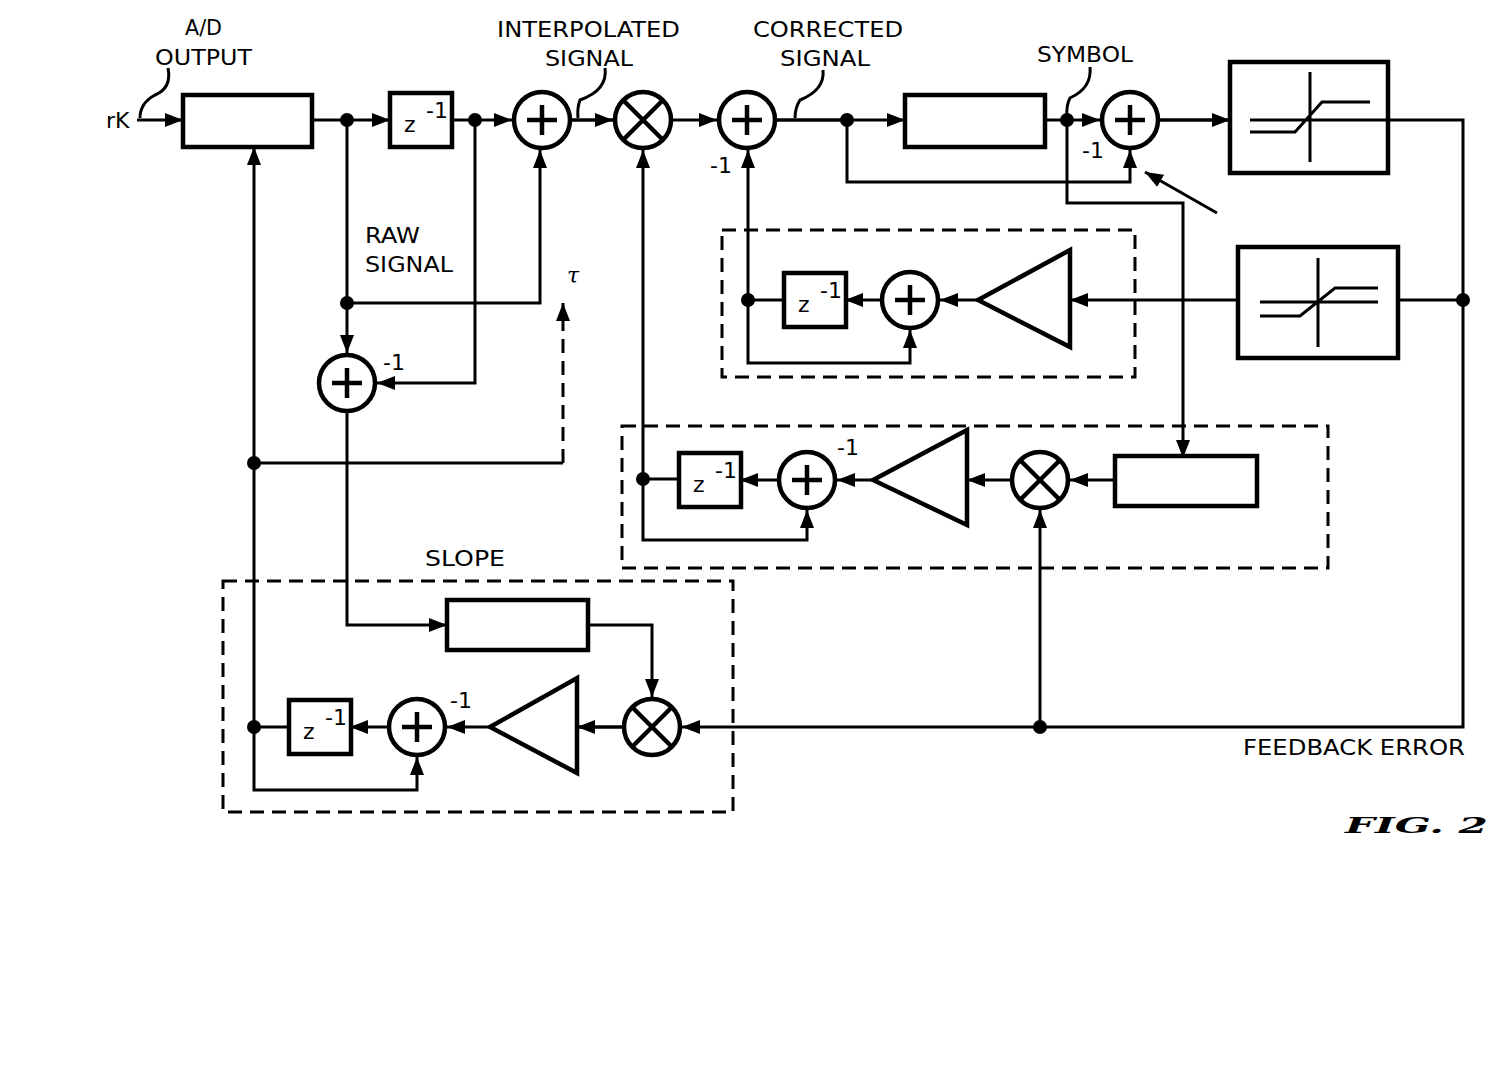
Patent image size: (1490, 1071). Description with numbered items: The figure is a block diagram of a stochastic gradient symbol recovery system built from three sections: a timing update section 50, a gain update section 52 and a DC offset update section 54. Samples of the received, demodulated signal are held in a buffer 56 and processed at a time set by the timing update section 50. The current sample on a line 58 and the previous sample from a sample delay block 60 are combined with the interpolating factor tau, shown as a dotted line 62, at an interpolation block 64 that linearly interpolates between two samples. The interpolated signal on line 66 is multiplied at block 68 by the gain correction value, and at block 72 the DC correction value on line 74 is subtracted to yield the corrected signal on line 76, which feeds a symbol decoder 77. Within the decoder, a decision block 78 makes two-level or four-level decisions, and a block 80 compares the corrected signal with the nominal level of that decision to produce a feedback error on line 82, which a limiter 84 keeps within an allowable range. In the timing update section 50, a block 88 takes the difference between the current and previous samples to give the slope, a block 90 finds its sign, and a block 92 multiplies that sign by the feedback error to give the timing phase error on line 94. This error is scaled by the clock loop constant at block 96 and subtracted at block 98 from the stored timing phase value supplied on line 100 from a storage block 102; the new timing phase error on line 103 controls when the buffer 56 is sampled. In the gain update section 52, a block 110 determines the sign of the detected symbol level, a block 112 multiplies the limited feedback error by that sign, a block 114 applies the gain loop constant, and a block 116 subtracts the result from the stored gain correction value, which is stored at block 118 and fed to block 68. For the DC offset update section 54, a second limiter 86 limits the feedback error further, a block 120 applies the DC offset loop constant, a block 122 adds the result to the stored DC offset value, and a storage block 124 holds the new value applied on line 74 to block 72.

The timing update section 50 is at (672, 812).
The gain update section 52 is at (1330, 498).
The DC offset update section 54 is at (847, 230).
The buffer 56 is at (273, 95).
The line 58 is at (542, 212).
The sample delay block 60 is at (418, 93).
The dotted line 62 is at (563, 365).
The interpolation block 64 is at (553, 147).
The line 66 is at (587, 125).
The multiplying block 68 is at (657, 95).
The subtracting block 72 is at (768, 145).
The line 74 is at (750, 190).
The line 76 is at (823, 108).
The symbol decoder 77 is at (1196, 204).
The decision block 78 is at (933, 95).
The comparison block 80 is at (1150, 96).
The line 82 is at (1172, 122).
The limiter 84 is at (1293, 62).
The second limiter 86 is at (1340, 247).
The difference block 88 is at (367, 358).
The sign block 90 is at (590, 638).
The multiplying block 92 is at (660, 758).
The line 94 is at (612, 728).
The clock loop constant block 96 is at (542, 692).
The subtracting block 98 is at (443, 748).
The line 100 is at (317, 790).
The storage block 102 is at (317, 703).
The line 103 is at (380, 314).
The sign block 110 is at (1220, 458).
The multiplying block 112 is at (1063, 505).
The gain loop constant block 114 is at (922, 502).
The subtracting block 116 is at (817, 507).
The storage block 118 is at (700, 455).
The DC offset loop constant block 120 is at (1017, 322).
The adding block 122 is at (895, 272).
The storage block 124 is at (795, 275).